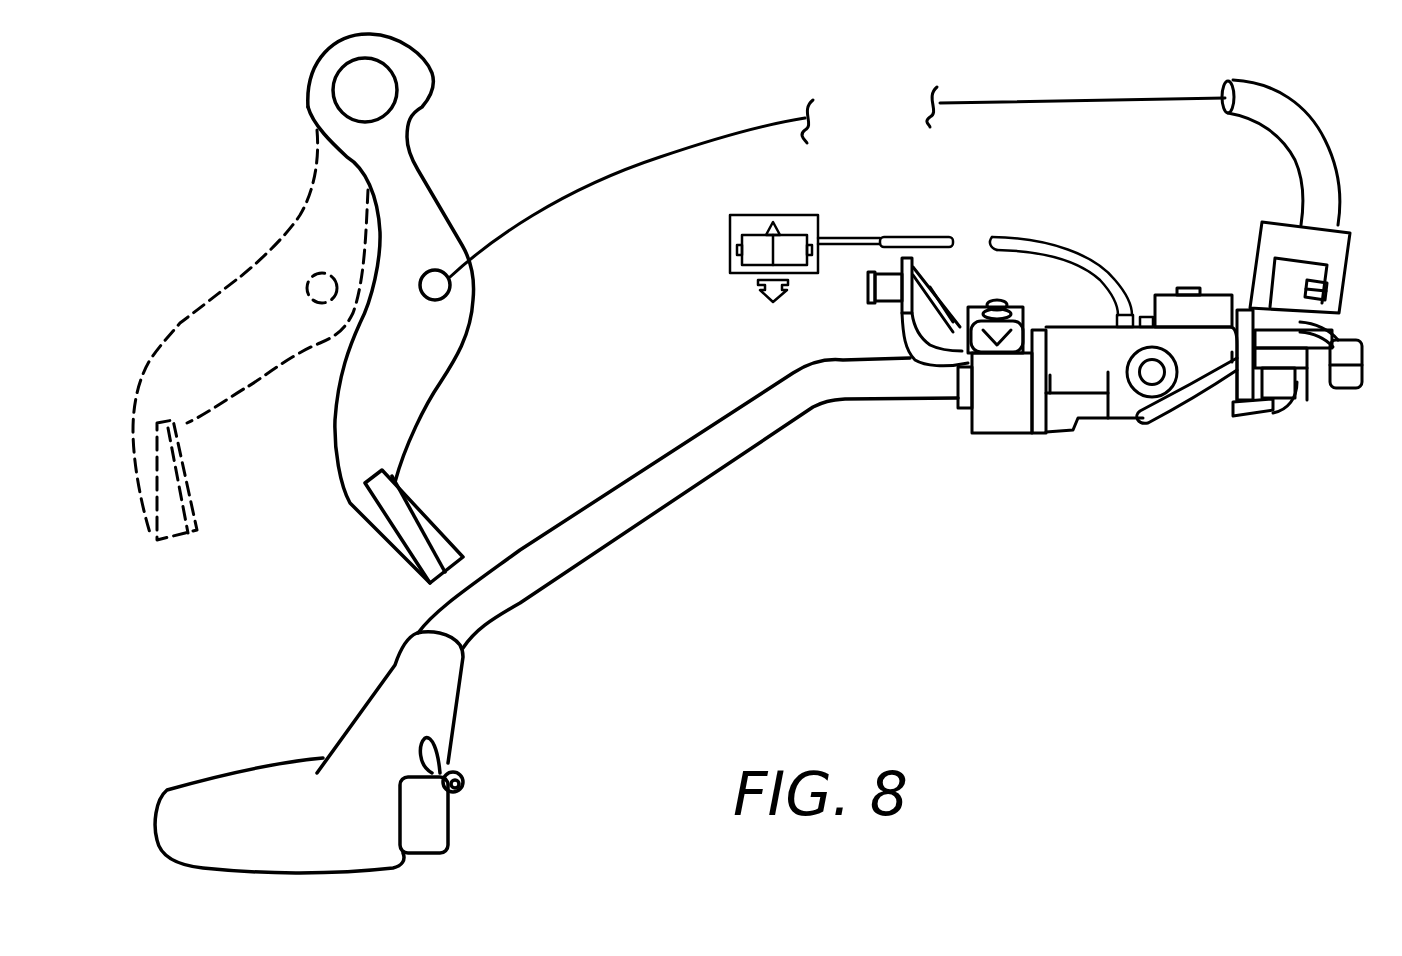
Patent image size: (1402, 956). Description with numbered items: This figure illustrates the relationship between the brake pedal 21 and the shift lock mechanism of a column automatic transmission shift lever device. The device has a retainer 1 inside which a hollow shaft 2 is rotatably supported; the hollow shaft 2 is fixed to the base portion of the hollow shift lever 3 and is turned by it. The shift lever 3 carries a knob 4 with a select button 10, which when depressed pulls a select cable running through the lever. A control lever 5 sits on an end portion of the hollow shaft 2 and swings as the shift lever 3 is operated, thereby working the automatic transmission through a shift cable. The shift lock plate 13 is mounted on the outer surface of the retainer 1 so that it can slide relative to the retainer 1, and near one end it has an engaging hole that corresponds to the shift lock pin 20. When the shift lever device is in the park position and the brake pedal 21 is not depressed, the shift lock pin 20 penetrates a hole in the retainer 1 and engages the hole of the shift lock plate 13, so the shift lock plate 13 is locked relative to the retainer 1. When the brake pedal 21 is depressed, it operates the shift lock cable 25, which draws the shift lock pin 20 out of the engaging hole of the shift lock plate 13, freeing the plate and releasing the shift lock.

The retainer 1 is at (1187, 420).
The hollow shaft 2 is at (947, 397).
The shift lever 3 is at (718, 453).
The knob 4 is at (447, 683).
The control lever 5 is at (903, 335).
The select button 10 is at (435, 822).
The shift lock plate 13 is at (1310, 347).
The shift lock pin 20 is at (1310, 313).
The brake pedal 21 is at (422, 377).
The shift lock cable 25 is at (1057, 103).